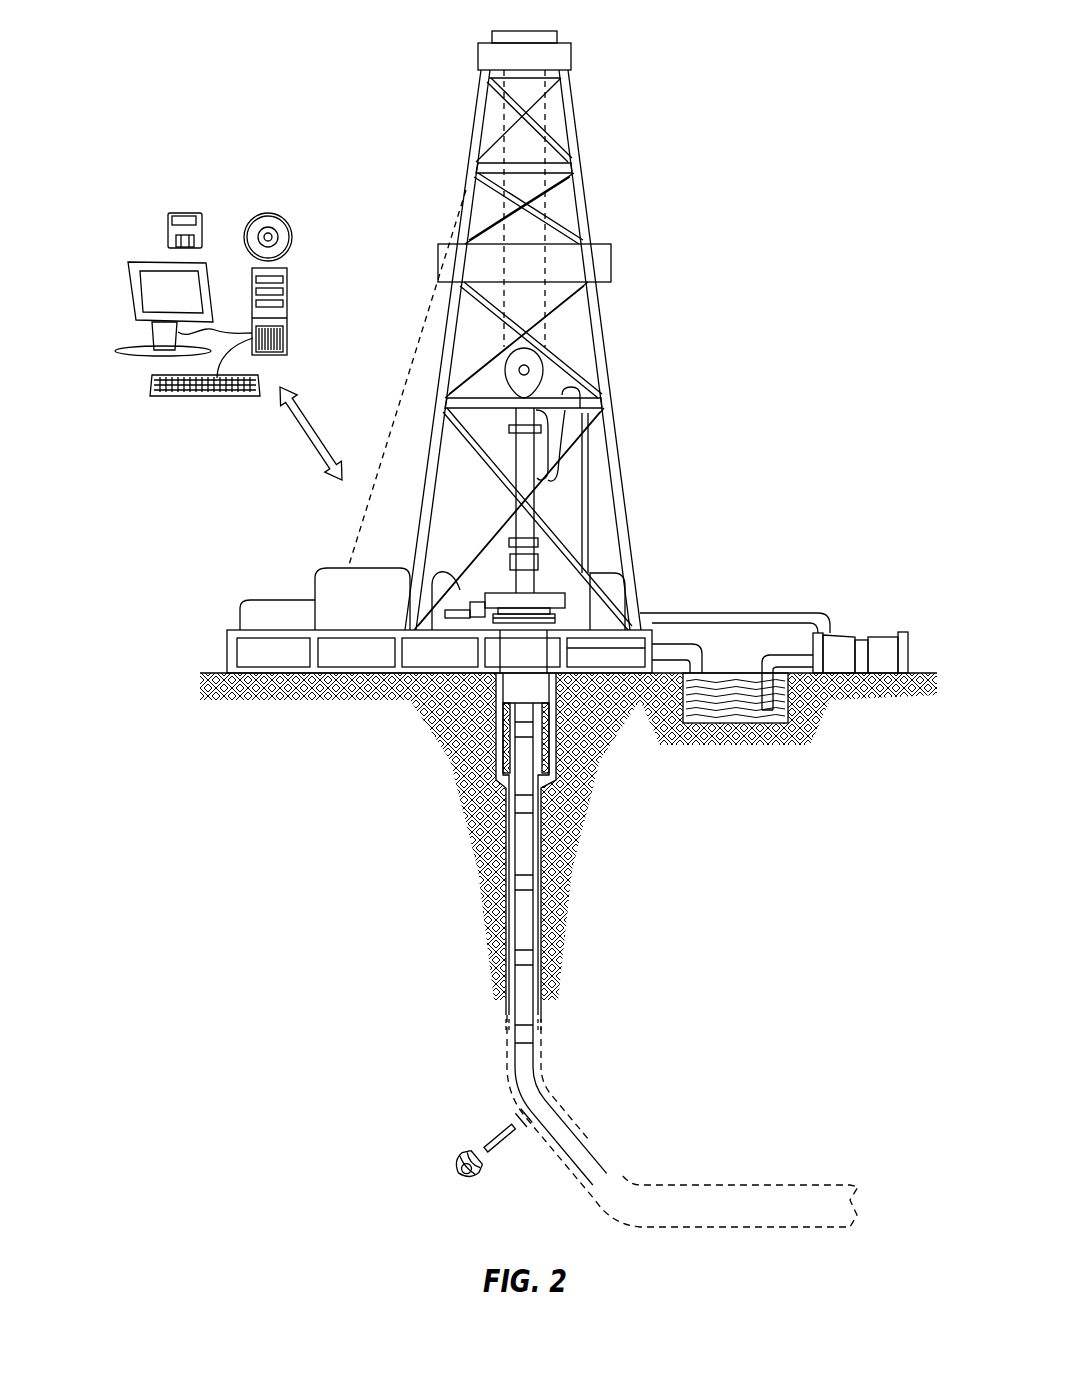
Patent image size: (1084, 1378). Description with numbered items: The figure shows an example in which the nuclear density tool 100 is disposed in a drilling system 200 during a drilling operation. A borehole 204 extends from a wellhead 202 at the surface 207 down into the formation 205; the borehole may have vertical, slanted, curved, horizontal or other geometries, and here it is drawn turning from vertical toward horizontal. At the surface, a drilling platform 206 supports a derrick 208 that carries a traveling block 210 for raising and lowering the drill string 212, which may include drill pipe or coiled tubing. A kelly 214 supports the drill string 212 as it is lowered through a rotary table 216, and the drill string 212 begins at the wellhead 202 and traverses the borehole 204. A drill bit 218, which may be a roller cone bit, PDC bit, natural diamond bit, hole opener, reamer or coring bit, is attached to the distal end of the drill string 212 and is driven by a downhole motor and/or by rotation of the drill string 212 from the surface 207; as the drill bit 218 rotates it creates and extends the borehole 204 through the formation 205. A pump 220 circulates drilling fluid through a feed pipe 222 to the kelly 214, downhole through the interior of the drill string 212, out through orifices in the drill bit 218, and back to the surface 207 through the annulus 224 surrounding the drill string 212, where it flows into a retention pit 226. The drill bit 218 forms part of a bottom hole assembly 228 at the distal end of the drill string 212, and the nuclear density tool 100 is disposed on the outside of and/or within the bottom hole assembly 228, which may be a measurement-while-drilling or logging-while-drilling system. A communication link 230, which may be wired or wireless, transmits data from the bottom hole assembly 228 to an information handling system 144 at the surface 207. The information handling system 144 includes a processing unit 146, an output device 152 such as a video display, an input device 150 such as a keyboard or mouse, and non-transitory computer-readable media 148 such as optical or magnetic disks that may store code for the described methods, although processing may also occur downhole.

The drilling system 200 is at (848, 130).
The derrick 208 is at (585, 182).
The traveling block 210 is at (547, 375).
The kelly 214 is at (527, 458).
The rotary table 216 is at (560, 593).
The wellhead 202 is at (582, 618).
The drilling platform 206 is at (227, 652).
The feed pipe 222 is at (764, 613).
The pump 220 is at (847, 633).
The surface 207 is at (922, 673).
The retention pit 226 is at (730, 710).
The formation 205 is at (770, 968).
The annulus 224 is at (508, 878).
The borehole 204 is at (541, 875).
The drill string 212 is at (533, 858).
The nuclear density tool 100 is at (573, 1137).
The drill bit 218 is at (625, 1170).
The bottom hole assembly 228 is at (527, 1143).
The information handling system 144 is at (133, 198).
The non-transitory computer-readable media 148 is at (265, 212).
The output device 152 is at (130, 302).
The processing unit 146 is at (288, 282).
The input device 150 is at (160, 398).
The communication link 230 is at (303, 438).